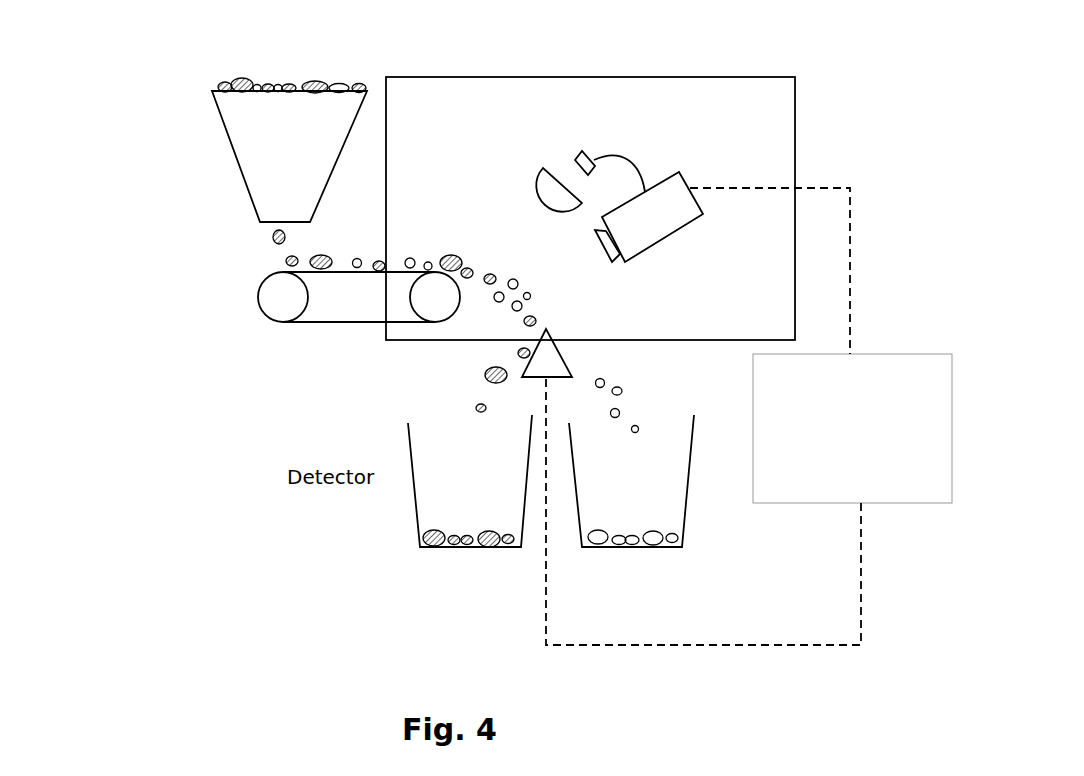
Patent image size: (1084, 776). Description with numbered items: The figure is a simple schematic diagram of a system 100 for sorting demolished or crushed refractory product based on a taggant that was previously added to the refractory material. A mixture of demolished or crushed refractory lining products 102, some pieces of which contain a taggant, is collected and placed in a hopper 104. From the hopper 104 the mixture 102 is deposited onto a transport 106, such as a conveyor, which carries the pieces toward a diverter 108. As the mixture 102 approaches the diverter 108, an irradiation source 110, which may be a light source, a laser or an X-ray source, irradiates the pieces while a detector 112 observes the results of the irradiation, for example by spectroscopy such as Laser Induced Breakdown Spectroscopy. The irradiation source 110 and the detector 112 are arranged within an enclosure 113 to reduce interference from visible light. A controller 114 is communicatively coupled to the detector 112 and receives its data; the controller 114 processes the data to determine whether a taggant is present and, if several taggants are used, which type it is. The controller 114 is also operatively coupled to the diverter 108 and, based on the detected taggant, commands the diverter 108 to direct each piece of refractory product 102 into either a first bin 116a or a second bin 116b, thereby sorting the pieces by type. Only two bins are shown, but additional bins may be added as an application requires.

The system 100 is at (101, 183).
The mixture of demolished/crushed refractory lining products 102 is at (257, 50).
The hopper 104 is at (233, 147).
The transport 106 is at (260, 298).
The diverter 108 is at (561, 352).
The irradiation source 110 is at (563, 162).
The detector 112 is at (704, 206).
The enclosure 113 is at (620, 77).
The controller 114 is at (890, 503).
The first bin 116a is at (416, 510).
The second bin 116b is at (686, 510).